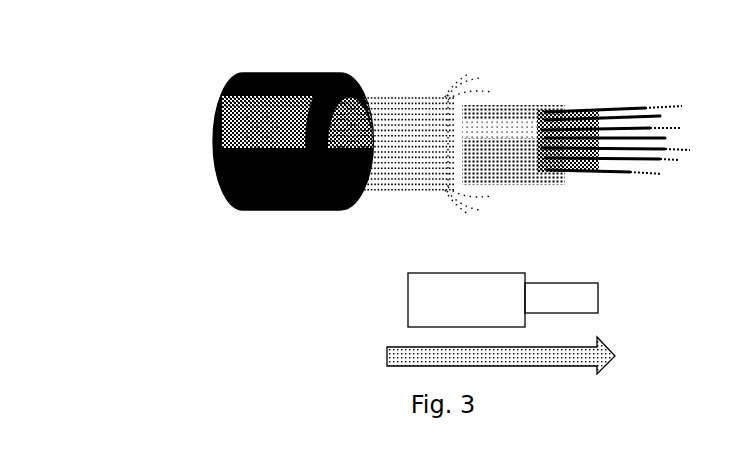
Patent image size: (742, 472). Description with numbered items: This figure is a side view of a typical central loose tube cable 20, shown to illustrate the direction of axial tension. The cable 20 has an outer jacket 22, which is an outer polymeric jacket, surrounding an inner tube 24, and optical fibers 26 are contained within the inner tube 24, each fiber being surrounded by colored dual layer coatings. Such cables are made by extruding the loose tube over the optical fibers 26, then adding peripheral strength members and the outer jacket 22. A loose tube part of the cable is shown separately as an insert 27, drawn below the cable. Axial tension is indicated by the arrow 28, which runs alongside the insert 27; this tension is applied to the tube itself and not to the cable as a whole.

The central loose tube cable 20 is at (400, 153).
The outer jacket 22 is at (238, 80).
The inner tube 24 is at (526, 115).
The optical fibers 26 is at (657, 162).
The insert 27 is at (498, 283).
The arrow 28 is at (385, 355).